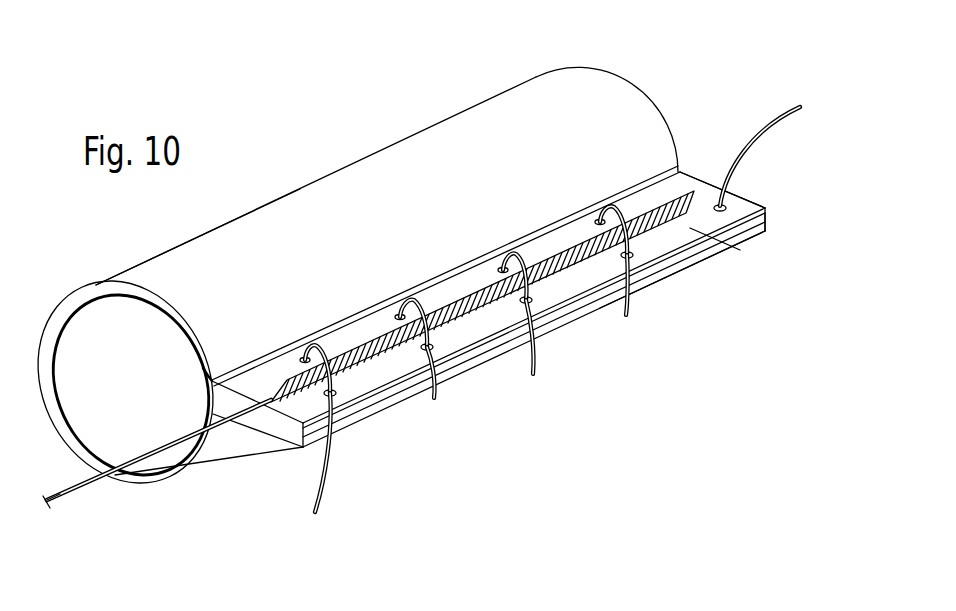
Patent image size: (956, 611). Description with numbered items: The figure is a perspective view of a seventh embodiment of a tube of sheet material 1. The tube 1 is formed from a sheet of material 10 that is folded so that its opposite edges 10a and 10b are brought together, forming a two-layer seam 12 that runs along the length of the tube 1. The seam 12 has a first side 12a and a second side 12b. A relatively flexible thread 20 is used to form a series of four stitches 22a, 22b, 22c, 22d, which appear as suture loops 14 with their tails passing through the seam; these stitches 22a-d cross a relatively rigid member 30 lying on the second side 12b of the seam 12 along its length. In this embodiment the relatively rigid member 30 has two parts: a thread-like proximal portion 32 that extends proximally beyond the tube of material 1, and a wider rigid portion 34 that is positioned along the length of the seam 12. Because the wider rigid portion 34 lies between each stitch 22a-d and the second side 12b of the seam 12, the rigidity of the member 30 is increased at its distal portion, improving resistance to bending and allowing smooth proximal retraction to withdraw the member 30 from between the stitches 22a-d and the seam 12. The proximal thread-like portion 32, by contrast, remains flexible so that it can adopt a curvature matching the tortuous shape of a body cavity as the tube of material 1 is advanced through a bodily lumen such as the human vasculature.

The tube of sheet material 1 is at (333, 156).
The sheet of material 10 is at (620, 76).
The edge 10a is at (766, 222).
The edge 10b is at (766, 207).
The seam 12 is at (695, 179).
The first side of the seam 12a is at (678, 272).
The second side of the seam 12b is at (689, 228).
The suture threads 14 is at (300, 361).
The thread 20 is at (316, 487).
The stitch 22a is at (313, 343).
The stitch 22b is at (413, 296).
The stitch 22c is at (513, 251).
The stitch 22d is at (614, 205).
The relatively rigid member 30 is at (106, 476).
The thread-like proximal portion 32 is at (59, 501).
The wider rigid portion 34 is at (568, 268).